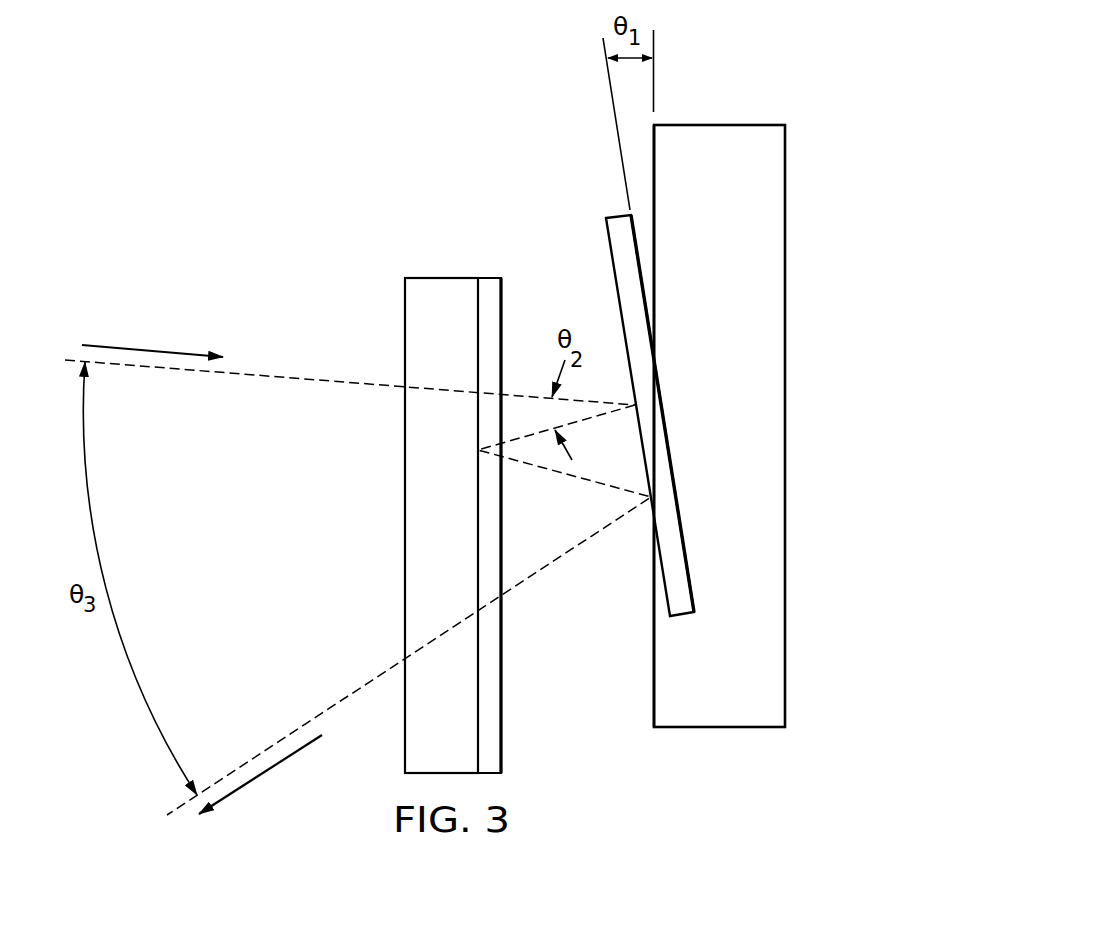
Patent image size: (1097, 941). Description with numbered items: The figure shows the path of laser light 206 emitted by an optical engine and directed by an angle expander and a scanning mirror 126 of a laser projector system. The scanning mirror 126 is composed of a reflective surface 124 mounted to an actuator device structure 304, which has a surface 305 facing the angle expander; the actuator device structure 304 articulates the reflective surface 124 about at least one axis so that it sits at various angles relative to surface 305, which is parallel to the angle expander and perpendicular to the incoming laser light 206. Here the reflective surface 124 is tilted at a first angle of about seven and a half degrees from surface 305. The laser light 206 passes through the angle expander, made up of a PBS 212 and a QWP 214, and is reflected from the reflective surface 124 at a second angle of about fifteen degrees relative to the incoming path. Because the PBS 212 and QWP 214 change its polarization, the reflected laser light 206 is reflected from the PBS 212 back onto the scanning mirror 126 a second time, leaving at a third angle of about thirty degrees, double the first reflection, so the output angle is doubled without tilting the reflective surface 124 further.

The laser light 206 is at (293, 378).
The PBS 212 is at (435, 287).
The QWP 214 is at (490, 287).
The reflective surface 124 is at (617, 295).
The scanning mirror 126 is at (754, 366).
The actuator device structure 304 is at (785, 426).
The surface 305 is at (654, 665).